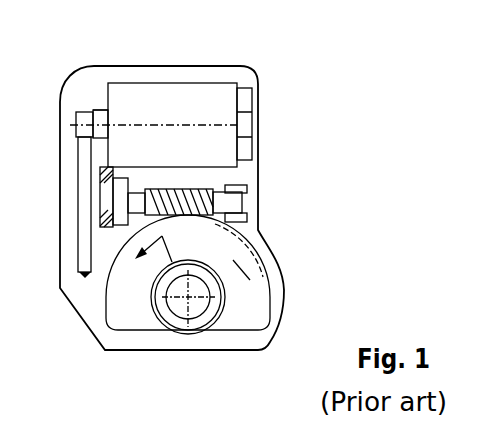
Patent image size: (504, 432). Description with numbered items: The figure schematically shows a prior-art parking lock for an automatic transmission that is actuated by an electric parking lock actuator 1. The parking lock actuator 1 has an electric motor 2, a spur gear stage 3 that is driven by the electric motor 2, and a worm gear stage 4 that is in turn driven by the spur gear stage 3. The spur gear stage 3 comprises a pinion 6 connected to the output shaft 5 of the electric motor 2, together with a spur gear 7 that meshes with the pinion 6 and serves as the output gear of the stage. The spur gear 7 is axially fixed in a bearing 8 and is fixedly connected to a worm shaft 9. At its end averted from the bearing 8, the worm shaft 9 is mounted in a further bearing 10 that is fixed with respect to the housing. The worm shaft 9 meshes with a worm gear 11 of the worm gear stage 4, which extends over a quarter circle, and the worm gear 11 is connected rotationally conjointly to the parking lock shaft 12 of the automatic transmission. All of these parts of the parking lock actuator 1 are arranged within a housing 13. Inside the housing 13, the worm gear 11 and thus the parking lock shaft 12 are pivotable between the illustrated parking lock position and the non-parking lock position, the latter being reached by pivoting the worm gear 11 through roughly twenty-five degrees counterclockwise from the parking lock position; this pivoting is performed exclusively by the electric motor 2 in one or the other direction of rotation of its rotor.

The parking lock actuator 1 is at (276, 46).
The electric motor 2 is at (180, 96).
The spur gear stage 3 is at (66, 150).
The worm gear stage 4 is at (253, 226).
The output shaft 5 is at (106, 110).
The pinion 6 is at (76, 120).
The spur gear 7 is at (80, 268).
The bearing 8 is at (100, 230).
The worm shaft 9 is at (194, 190).
The further bearing 10 is at (248, 212).
The worm gear 11 is at (226, 268).
The parking lock shaft 12 is at (200, 302).
The housing 13 is at (259, 142).